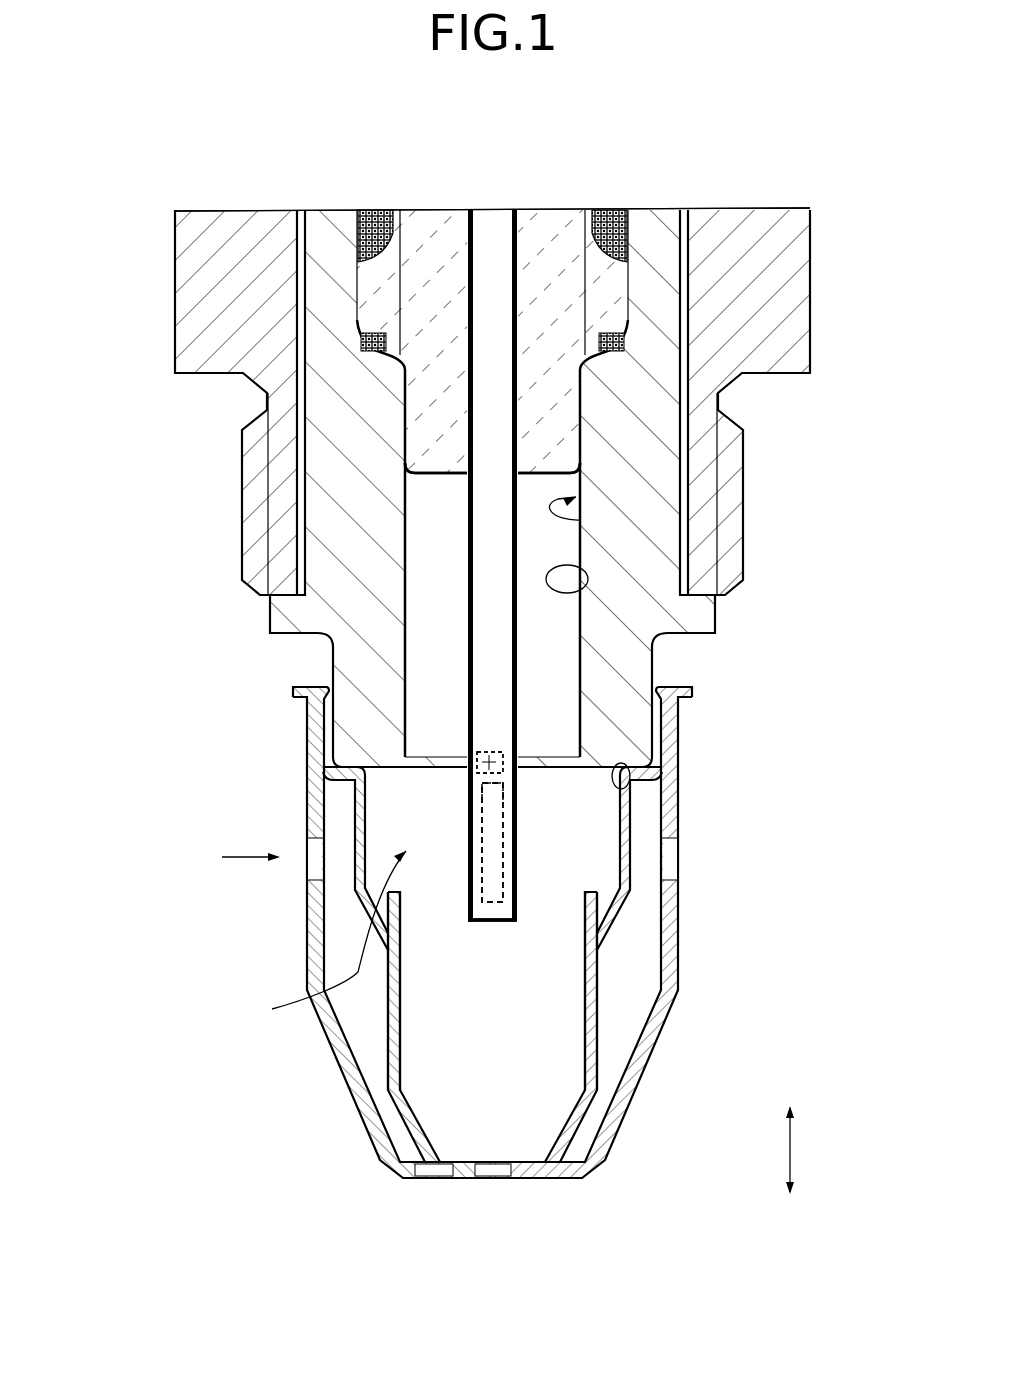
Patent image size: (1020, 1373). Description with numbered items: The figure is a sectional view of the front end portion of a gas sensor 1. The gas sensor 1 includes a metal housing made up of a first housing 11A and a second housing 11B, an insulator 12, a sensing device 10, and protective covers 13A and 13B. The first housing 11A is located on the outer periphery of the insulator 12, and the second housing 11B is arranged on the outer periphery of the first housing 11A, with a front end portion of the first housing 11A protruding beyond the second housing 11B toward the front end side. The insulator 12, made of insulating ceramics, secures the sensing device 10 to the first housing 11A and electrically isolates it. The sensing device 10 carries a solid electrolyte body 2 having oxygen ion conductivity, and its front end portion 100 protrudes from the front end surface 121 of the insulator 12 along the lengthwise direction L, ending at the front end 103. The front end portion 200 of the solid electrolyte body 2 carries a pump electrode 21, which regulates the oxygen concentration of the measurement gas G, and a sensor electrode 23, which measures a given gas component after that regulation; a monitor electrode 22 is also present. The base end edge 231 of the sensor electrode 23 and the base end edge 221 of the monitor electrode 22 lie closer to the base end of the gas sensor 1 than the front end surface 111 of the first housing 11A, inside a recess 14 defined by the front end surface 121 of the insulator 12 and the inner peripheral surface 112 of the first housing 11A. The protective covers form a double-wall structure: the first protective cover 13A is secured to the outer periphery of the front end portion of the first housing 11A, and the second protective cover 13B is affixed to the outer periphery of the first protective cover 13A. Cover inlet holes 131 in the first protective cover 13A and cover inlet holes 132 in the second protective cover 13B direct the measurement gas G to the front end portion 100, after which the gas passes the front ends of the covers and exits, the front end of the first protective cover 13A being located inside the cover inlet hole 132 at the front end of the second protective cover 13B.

The gas sensor 1 is at (687, 150).
The solid electrolyte body 2 is at (487, 292).
The sensing device 10 is at (492, 218).
The first housing 11A is at (360, 673).
The second housing 11B is at (205, 292).
The front end surface of the first housing 111 is at (630, 777).
The inner peripheral surface of the first housing 112 is at (588, 580).
The insulator 12 is at (440, 257).
The front end surface of the insulator 121 is at (438, 478).
The first protective cover 13A is at (390, 1087).
The second protective cover 13B is at (323, 1027).
The cover inlet holes of the first protective cover 131 is at (358, 906).
The cover inlet holes of the second protective cover 132 is at (312, 870).
The recess 14 is at (580, 520).
The pump electrode 21 is at (515, 772).
The monitor electrode 22 is at (506, 856).
The base end edge of the monitor electrode 221 is at (520, 766).
The sensor electrode 23 is at (478, 767).
The base end edge of the sensor electrode 231 is at (485, 757).
The front end portion of the sensing device 100 is at (483, 930).
The front end portion of the solid electrolyte body 200 is at (465, 1094).
The front end of the sensing device 103 is at (500, 922).
The measurement gas G is at (314, 928).
The lengthwise direction L is at (801, 1150).